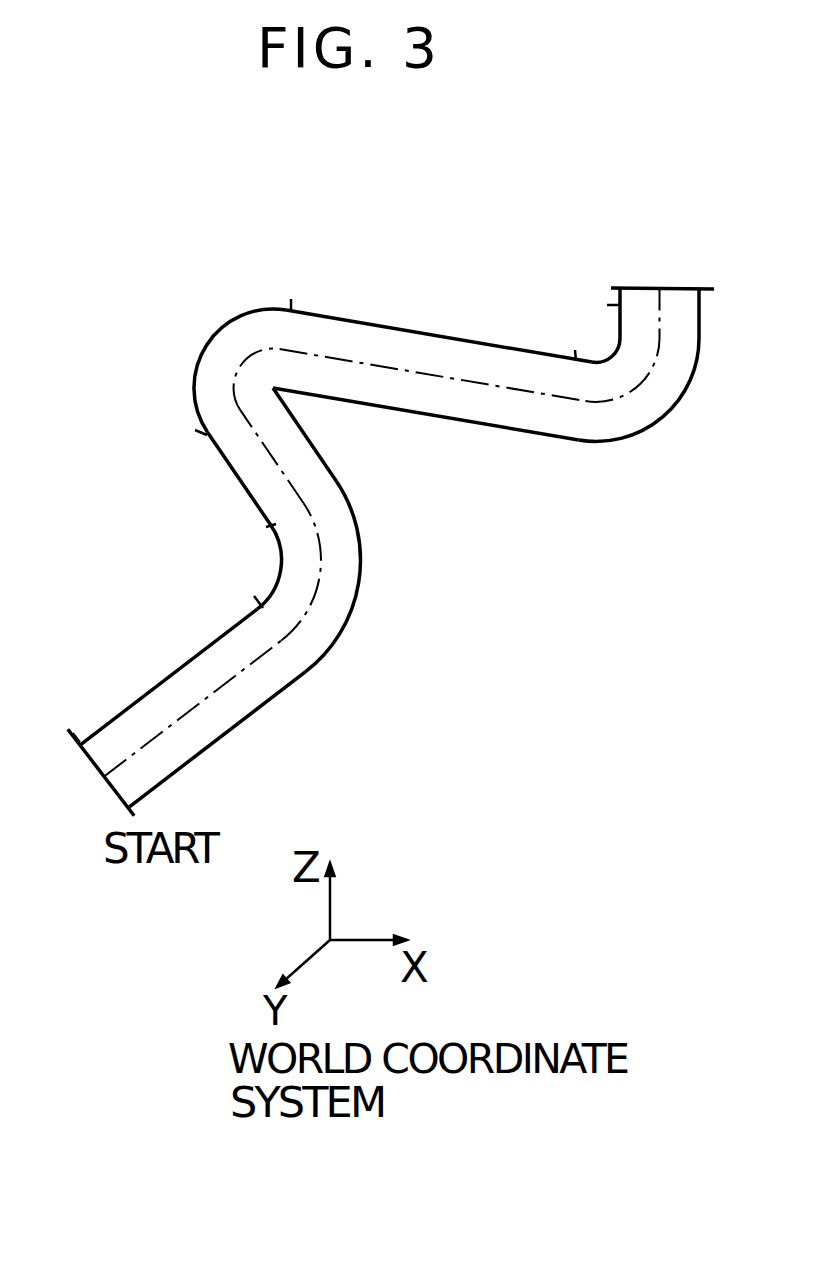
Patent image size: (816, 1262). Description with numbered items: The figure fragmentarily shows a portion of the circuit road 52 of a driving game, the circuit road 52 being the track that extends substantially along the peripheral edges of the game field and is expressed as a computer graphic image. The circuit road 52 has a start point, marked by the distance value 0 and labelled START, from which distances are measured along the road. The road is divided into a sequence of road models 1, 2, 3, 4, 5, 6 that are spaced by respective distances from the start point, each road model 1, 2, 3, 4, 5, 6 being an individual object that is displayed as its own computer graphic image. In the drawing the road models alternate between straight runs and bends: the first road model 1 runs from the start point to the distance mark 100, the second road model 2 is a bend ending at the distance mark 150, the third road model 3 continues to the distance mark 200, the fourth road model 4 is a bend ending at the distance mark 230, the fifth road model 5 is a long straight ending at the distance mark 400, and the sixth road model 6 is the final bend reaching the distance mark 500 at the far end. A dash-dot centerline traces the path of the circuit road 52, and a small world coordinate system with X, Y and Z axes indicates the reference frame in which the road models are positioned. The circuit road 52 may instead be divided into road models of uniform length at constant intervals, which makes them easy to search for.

The circuit road 52 is at (168, 272).
The road model 1 is at (152, 668).
The road model 2 is at (267, 565).
The road model 3 is at (217, 482).
The road model 4 is at (183, 349).
The road model 5 is at (425, 314).
The road model 6 is at (600, 321).
The start position 0 is at (62, 717).
The position 100 along pipe 100 is at (230, 593).
The position 150 along pipe 150 is at (240, 540).
The position 200 along pipe 200 is at (171, 443).
The position 230 along pipe 230 is at (296, 288).
The position 400 along pipe 400 is at (569, 339).
The position 500 along pipe 500 is at (586, 305).